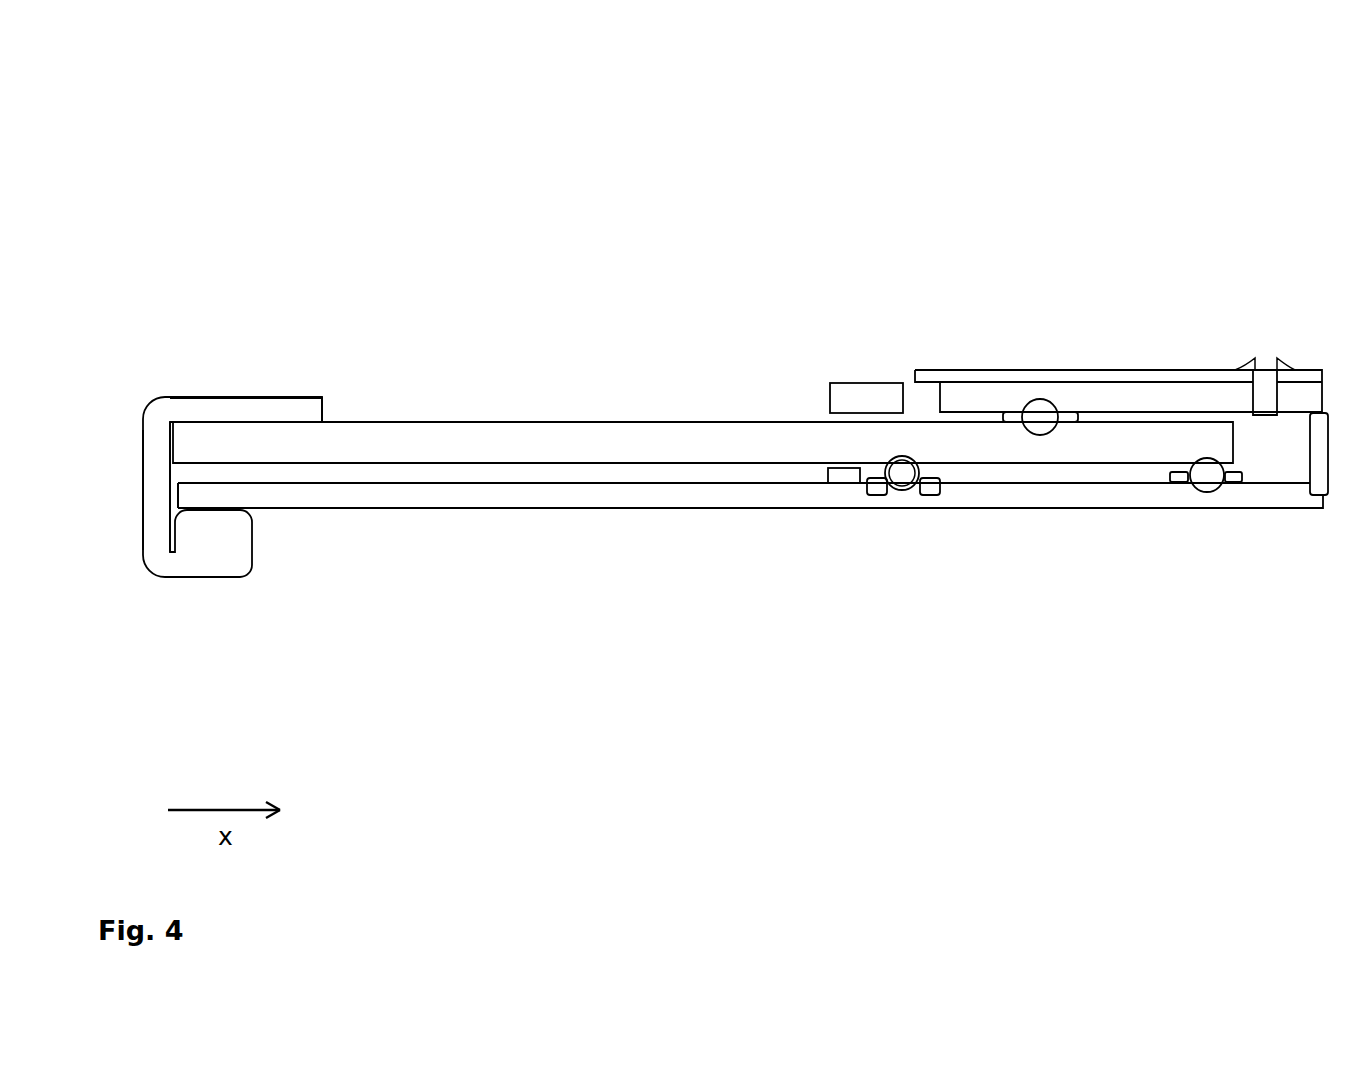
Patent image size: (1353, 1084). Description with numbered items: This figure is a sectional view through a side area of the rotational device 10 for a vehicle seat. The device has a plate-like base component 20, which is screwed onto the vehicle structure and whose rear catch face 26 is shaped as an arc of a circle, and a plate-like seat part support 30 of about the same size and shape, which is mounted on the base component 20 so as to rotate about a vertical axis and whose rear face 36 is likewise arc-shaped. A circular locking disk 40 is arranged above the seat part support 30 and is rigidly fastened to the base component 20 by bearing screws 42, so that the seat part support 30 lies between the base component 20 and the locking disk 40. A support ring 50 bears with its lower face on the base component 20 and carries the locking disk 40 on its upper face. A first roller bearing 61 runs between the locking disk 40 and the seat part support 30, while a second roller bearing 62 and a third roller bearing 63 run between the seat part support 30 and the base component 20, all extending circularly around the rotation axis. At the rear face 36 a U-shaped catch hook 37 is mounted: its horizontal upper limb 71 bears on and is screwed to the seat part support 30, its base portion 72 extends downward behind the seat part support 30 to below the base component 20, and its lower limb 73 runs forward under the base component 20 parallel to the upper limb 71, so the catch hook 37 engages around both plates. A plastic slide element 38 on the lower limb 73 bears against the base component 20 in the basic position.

The rotational device 10 is at (181, 151).
The base component 20 is at (442, 492).
The catch face 26 is at (182, 492).
The seat part support 30 is at (647, 447).
The rear face 36 is at (173, 445).
The catch hook 37 is at (227, 410).
The slide element 38 is at (212, 535).
The locking disk 40 is at (1157, 390).
The bearing screws 42 is at (1270, 390).
The support ring 50 is at (1315, 448).
The first roller bearing 61 is at (1050, 410).
The second roller bearing 62 is at (905, 470).
The third roller bearing 63 is at (1213, 480).
The upper limb 71 is at (283, 413).
The base portion 72 is at (158, 482).
The lower limb 73 is at (206, 569).